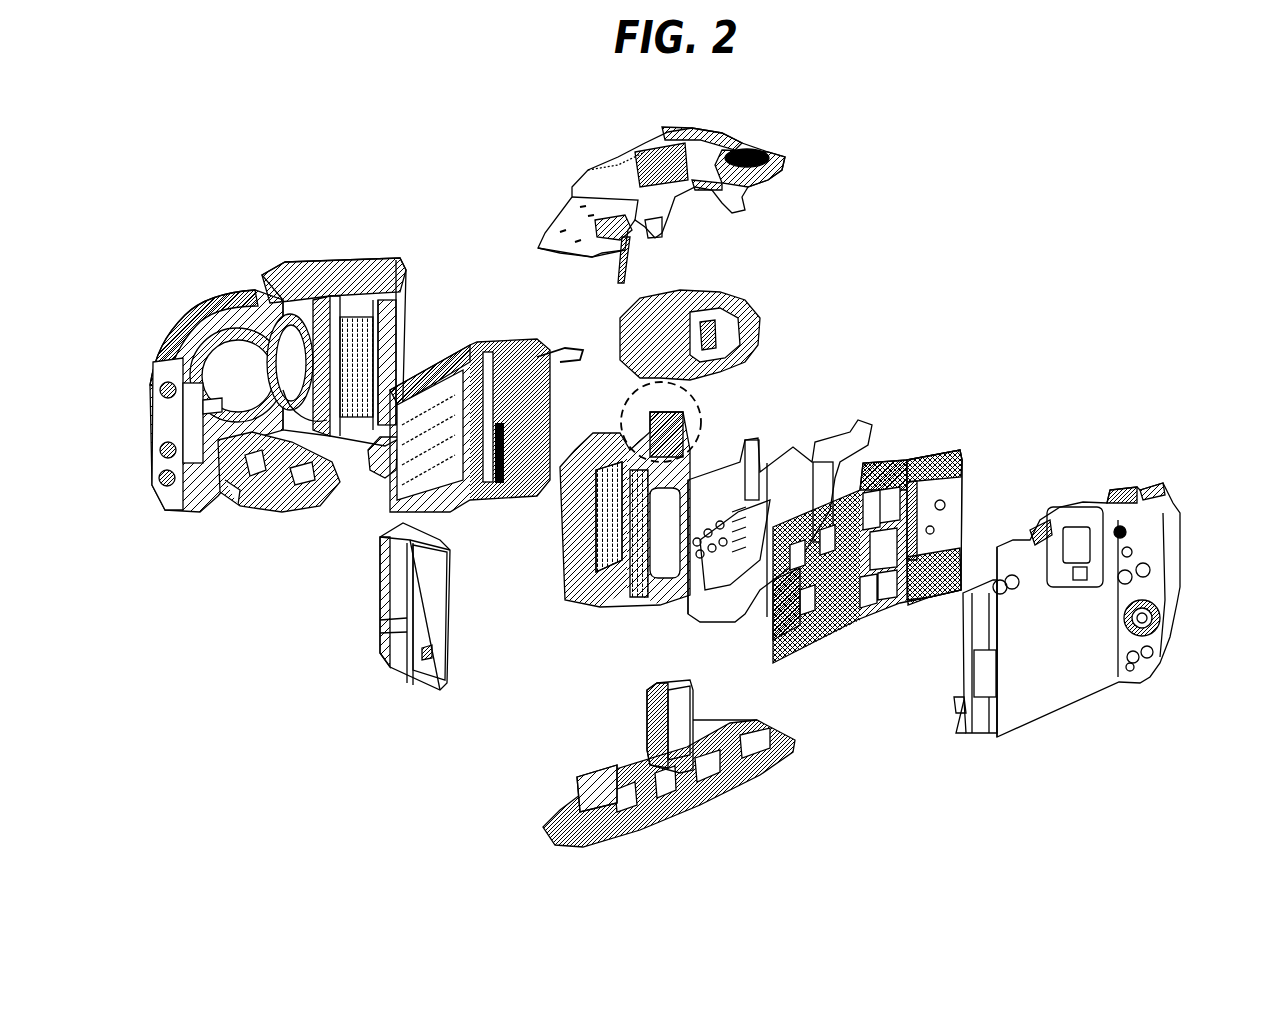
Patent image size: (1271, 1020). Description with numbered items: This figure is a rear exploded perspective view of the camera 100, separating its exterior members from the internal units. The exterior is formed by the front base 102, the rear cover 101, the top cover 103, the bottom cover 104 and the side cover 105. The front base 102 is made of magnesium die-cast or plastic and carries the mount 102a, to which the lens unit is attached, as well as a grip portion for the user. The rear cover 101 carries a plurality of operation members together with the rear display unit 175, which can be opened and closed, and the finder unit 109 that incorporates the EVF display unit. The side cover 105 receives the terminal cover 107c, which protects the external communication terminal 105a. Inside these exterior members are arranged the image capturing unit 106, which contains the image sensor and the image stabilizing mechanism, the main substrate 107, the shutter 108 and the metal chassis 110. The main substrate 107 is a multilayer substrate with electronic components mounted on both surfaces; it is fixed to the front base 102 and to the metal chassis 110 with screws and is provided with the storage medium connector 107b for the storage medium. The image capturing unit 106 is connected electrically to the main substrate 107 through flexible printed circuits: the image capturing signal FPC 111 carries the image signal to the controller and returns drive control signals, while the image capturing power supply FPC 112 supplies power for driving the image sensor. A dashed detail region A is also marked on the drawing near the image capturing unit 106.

The camera 100 is at (285, 170).
The rear cover 101 is at (1158, 498).
The front base 102 is at (340, 275).
The mount 102a is at (185, 300).
The top cover 103 is at (618, 135).
The bottom cover 104 is at (548, 832).
The side cover 105 is at (402, 676).
The external communication terminal 105a is at (413, 598).
The image capturing unit 106 is at (705, 450).
The main substrate 107 is at (945, 417).
The storage medium connector 107b is at (958, 500).
The terminal cover 107c is at (772, 592).
The shutter 108 is at (458, 378).
The finder unit 109 is at (740, 297).
The metal chassis 110 is at (797, 445).
The image capturing signal FPC 111 is at (643, 533).
The image capturing power supply FPC 112 is at (620, 508).
The rear display unit 175 is at (1046, 680).
The detail region A is at (645, 395).